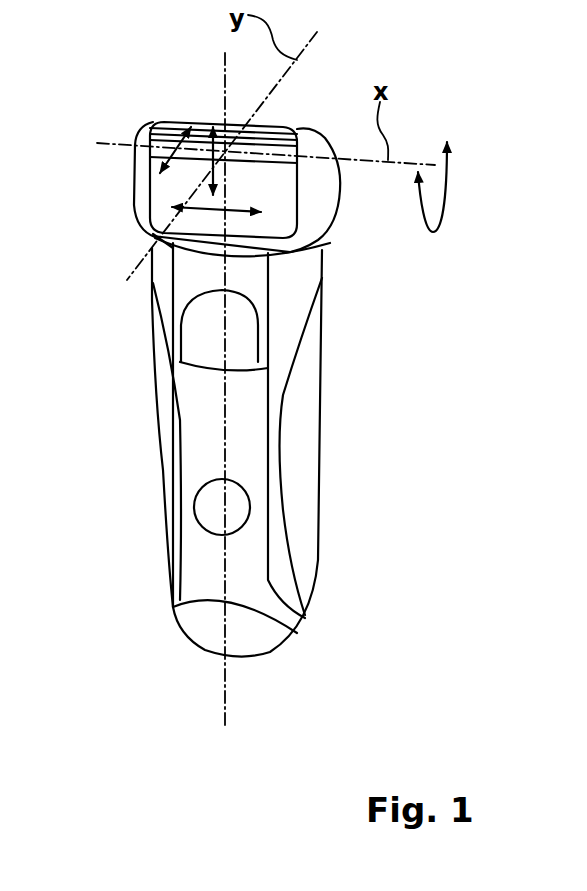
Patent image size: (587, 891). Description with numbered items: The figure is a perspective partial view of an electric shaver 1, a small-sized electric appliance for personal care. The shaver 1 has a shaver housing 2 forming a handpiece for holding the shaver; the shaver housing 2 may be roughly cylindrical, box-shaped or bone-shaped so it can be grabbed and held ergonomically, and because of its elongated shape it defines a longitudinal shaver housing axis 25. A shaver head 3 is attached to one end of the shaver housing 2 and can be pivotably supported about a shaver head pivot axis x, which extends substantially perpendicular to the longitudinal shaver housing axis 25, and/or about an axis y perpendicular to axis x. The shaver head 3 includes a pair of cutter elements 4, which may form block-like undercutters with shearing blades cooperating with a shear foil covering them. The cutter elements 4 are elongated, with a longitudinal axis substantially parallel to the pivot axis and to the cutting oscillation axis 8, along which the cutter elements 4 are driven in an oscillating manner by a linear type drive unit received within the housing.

The shaver 1 is at (366, 342).
The shaver housing 2 is at (322, 457).
The shaver head 3 is at (134, 195).
The cutter elements 4 is at (292, 127).
The cutting oscillation axis 8 is at (238, 210).
The longitudinal shaver housing axis 25 is at (225, 703).